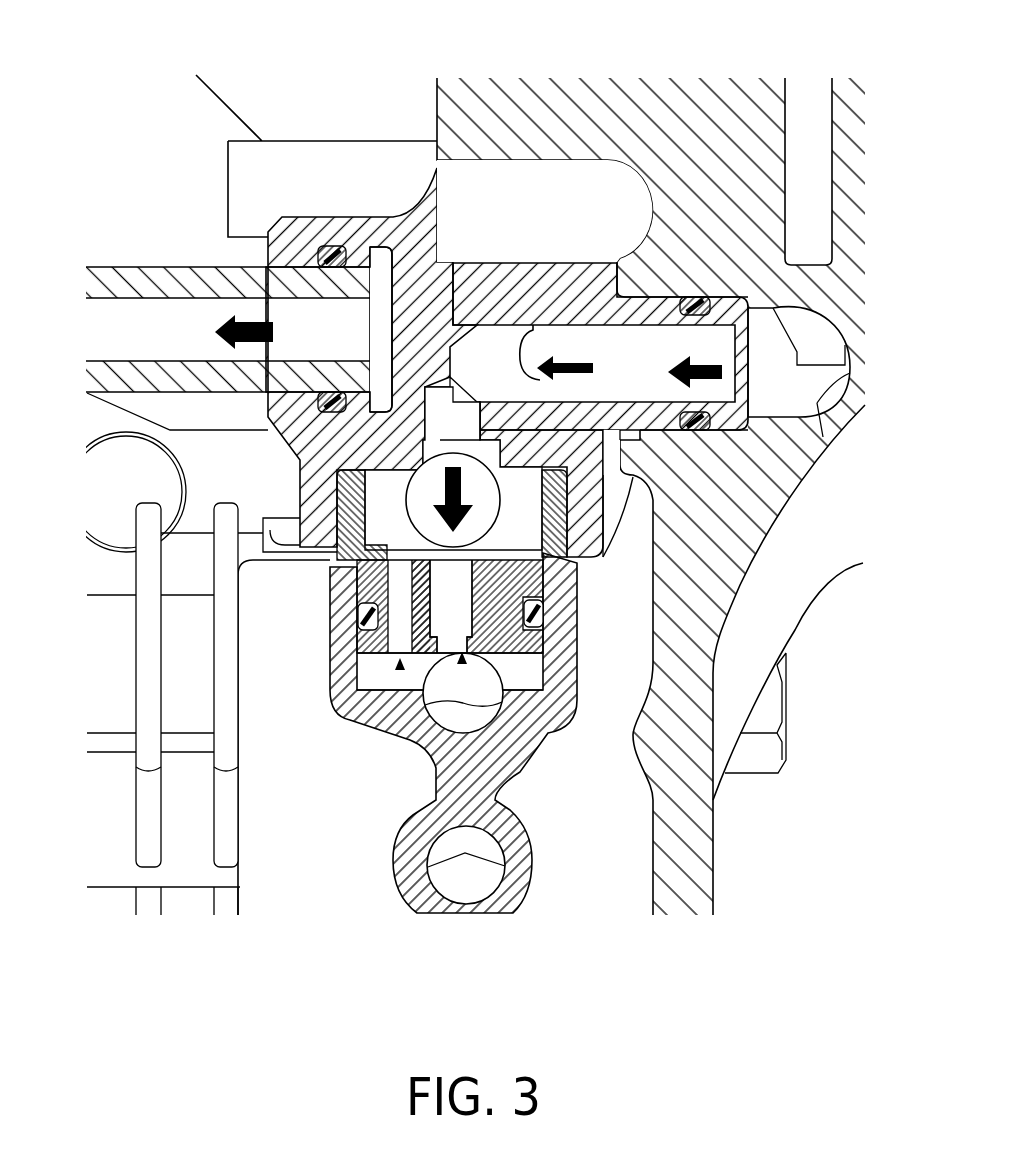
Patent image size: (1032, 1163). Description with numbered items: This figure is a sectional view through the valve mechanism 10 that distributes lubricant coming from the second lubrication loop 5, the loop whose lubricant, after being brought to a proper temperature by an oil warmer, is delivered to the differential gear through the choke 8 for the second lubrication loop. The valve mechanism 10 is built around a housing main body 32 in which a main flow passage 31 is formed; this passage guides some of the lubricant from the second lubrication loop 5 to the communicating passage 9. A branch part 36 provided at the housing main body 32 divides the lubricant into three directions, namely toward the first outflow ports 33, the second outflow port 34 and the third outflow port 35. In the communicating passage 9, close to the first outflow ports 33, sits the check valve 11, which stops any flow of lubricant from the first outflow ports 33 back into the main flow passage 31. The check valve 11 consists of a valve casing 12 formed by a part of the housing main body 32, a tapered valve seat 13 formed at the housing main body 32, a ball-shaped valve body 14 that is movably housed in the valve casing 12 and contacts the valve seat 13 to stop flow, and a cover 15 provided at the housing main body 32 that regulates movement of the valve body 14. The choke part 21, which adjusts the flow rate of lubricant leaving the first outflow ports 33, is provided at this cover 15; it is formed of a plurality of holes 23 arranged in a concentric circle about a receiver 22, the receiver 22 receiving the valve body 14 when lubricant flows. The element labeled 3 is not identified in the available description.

The bracket body 3 is at (420, 703).
The second lubrication loop 5 is at (833, 428).
The choke for the second lubrication loop 8 is at (422, 330).
The communicating passage 9 is at (625, 950).
The valve mechanism 10 is at (331, 203).
The check valve 11 is at (405, 580).
The valve casing 12 is at (352, 556).
The valve seat 13 is at (398, 553).
The valve body 14 is at (438, 535).
The cover 15 is at (368, 644).
The choke part 21 is at (430, 636).
The holes 23 is at (451, 606).
The receiver 22 is at (513, 660).
The main flow passage 31 is at (600, 410).
The housing main body 32 is at (482, 262).
The first outflow ports 33 is at (461, 664).
The second outflow port 34 is at (347, 245).
The third outflow port 35 is at (533, 330).
The branch part 36 is at (581, 346).